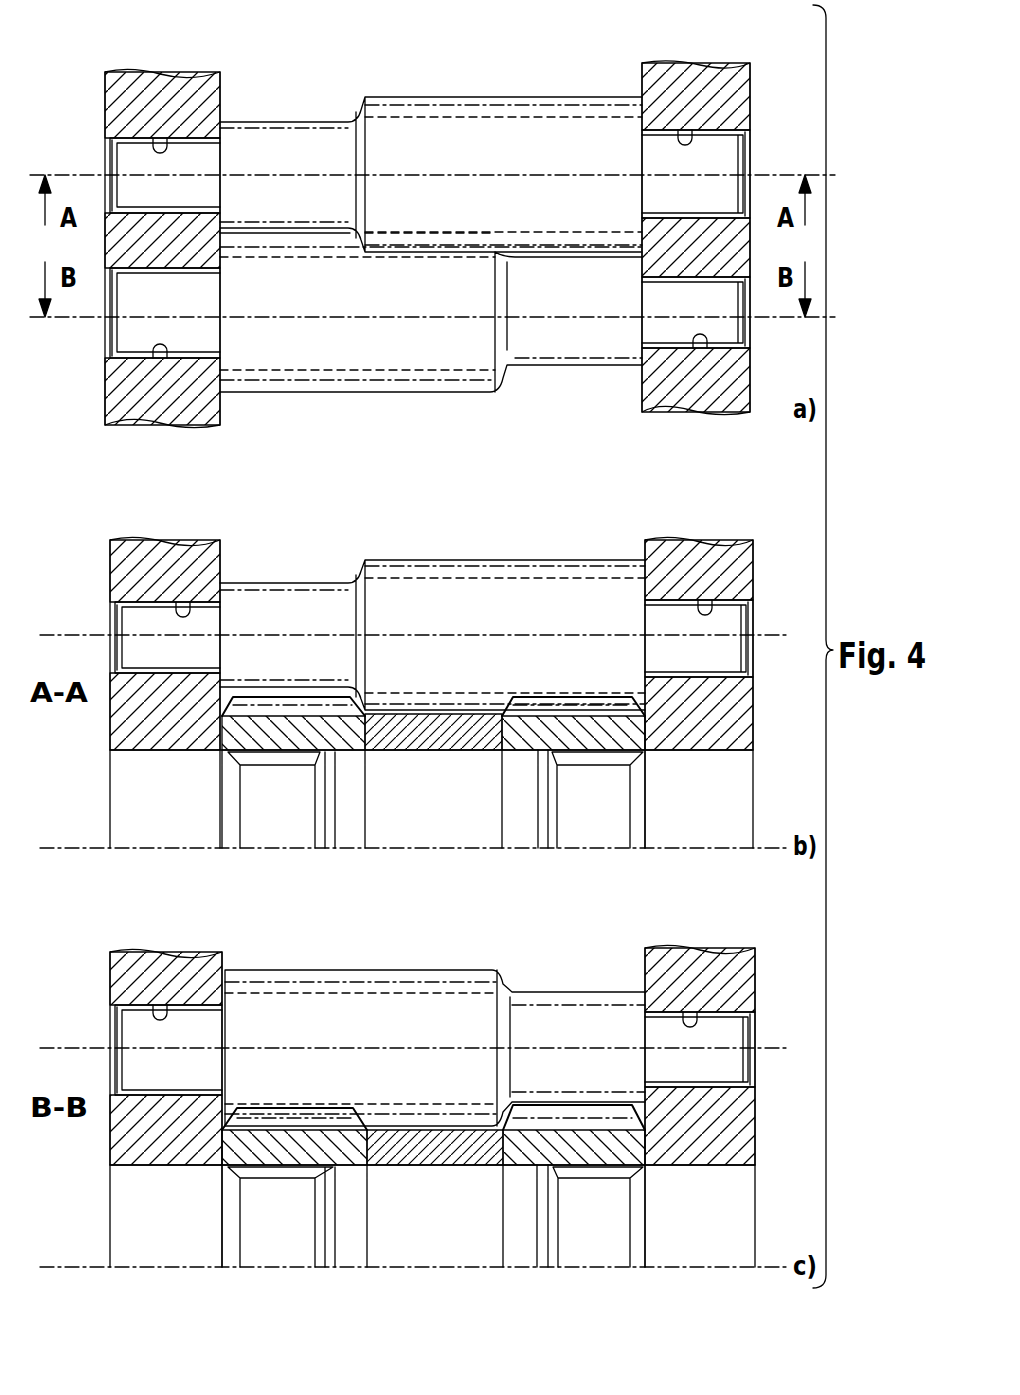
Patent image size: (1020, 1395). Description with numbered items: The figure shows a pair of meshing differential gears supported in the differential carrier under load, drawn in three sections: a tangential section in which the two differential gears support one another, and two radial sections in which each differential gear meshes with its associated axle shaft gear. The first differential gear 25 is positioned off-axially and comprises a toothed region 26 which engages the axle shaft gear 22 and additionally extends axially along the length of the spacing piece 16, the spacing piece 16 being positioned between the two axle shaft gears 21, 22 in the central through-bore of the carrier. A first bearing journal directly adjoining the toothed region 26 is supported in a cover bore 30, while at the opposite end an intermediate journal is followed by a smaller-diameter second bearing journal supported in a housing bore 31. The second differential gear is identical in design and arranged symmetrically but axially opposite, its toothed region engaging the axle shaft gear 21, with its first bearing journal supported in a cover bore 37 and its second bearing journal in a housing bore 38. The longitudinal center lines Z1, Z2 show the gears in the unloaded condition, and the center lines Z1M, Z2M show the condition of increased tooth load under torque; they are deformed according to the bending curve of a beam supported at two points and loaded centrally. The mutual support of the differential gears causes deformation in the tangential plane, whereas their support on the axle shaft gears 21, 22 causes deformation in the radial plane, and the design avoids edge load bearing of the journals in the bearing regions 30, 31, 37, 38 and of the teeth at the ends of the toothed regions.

The spacing piece 16 is at (445, 735).
The axle shaft gear 21 is at (293, 737).
The axle shaft gear 22 is at (597, 737).
The first differential gear 25 is at (526, 88).
The toothed region 26 is at (458, 396).
The cover bore 30 is at (685, 130).
The housing bore 31 is at (160, 146).
The cover bore 37 is at (160, 352).
The housing bore 38 is at (700, 350).
The longitudinal center line Z1 is at (283, 175).
The longitudinal center line under load Z1M is at (345, 175).
The longitudinal center line Z2 is at (366, 320).
The longitudinal center line under load Z2M is at (317, 320).